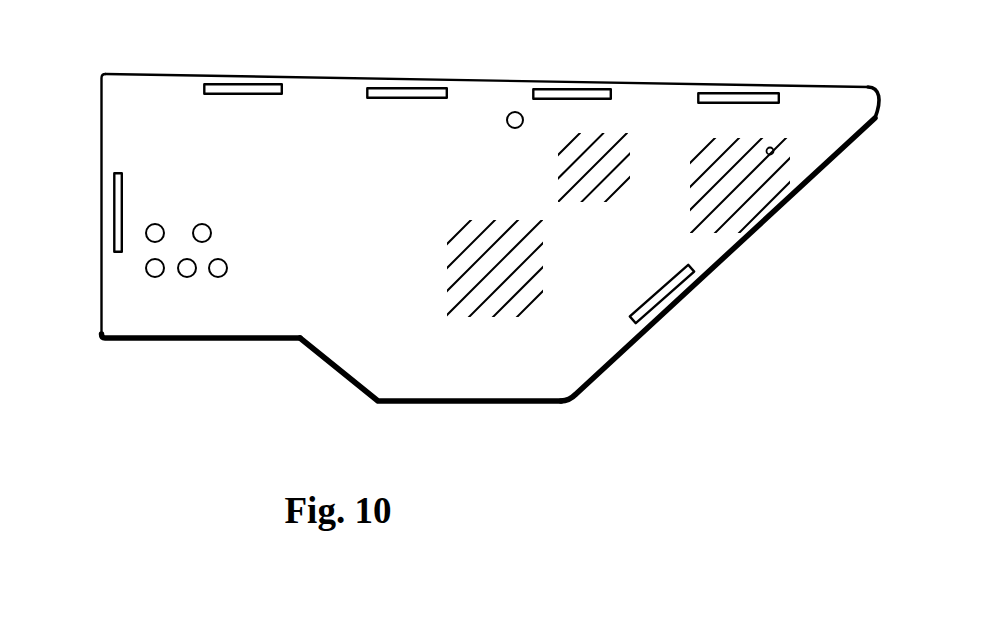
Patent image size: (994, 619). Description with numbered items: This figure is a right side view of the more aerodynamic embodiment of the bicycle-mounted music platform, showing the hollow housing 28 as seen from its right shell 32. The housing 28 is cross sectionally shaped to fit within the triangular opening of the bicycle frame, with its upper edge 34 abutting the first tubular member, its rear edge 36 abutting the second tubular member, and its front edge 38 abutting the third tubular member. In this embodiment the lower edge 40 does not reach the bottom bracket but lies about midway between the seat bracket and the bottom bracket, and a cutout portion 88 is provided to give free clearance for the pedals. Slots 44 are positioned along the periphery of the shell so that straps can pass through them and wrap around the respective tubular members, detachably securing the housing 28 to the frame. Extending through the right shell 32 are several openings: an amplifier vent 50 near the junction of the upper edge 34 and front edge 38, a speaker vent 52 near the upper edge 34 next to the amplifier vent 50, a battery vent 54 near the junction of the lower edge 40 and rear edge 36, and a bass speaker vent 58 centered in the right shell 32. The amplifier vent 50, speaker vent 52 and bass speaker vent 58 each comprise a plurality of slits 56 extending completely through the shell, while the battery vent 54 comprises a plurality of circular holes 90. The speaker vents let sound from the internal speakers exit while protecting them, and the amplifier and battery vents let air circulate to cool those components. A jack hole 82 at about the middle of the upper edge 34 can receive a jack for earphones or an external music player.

The hollow housing 28 is at (460, 231).
The right shell 32 is at (470, 108).
The upper edge 34 is at (412, 77).
The rear edge 36 is at (100, 148).
The front edge 38 is at (708, 277).
The lower edge 40 is at (378, 404).
The slots 44 is at (593, 97).
The amplifier vent 50 is at (750, 180).
The speaker vent 52 is at (610, 150).
The battery vent 54 is at (163, 250).
The slits 56 is at (773, 149).
The bass speaker vent 58 is at (497, 268).
The jack hole 82 is at (516, 112).
The cutout portion 88 is at (200, 340).
The circular holes 90 is at (150, 230).